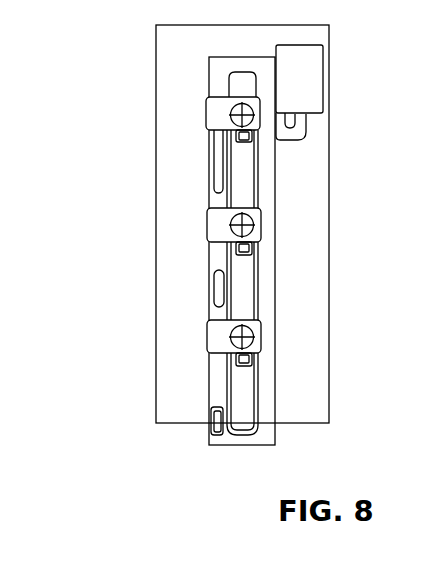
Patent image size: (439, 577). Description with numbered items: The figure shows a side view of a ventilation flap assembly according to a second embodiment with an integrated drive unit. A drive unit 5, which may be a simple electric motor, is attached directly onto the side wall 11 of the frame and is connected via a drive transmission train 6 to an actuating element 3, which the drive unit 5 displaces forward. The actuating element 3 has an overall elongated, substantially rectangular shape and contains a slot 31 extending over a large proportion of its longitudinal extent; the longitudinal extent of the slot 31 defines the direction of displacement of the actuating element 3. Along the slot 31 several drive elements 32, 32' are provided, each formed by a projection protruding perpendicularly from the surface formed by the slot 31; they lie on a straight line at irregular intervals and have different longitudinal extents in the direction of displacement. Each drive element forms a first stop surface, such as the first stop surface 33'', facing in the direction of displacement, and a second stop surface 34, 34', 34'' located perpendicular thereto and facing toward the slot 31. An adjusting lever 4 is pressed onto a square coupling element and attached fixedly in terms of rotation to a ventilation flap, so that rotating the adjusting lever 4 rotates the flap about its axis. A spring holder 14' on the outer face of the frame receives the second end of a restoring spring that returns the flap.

The actuating element 3 is at (267, 391).
The adjusting lever 4 is at (220, 113).
The drive unit 5 is at (313, 73).
The drive transmission train 6 is at (293, 132).
The side wall 11 is at (313, 220).
The spring holder 14' is at (317, 247).
The slot 31 is at (241, 382).
The drive element 32 is at (144, 165).
The drive element 32' is at (144, 268).
The first stop surface 33'' is at (144, 412).
The second stop surface 34 is at (327, 154).
The second stop surface 34' is at (330, 285).
The second stop surface 34'' is at (253, 424).